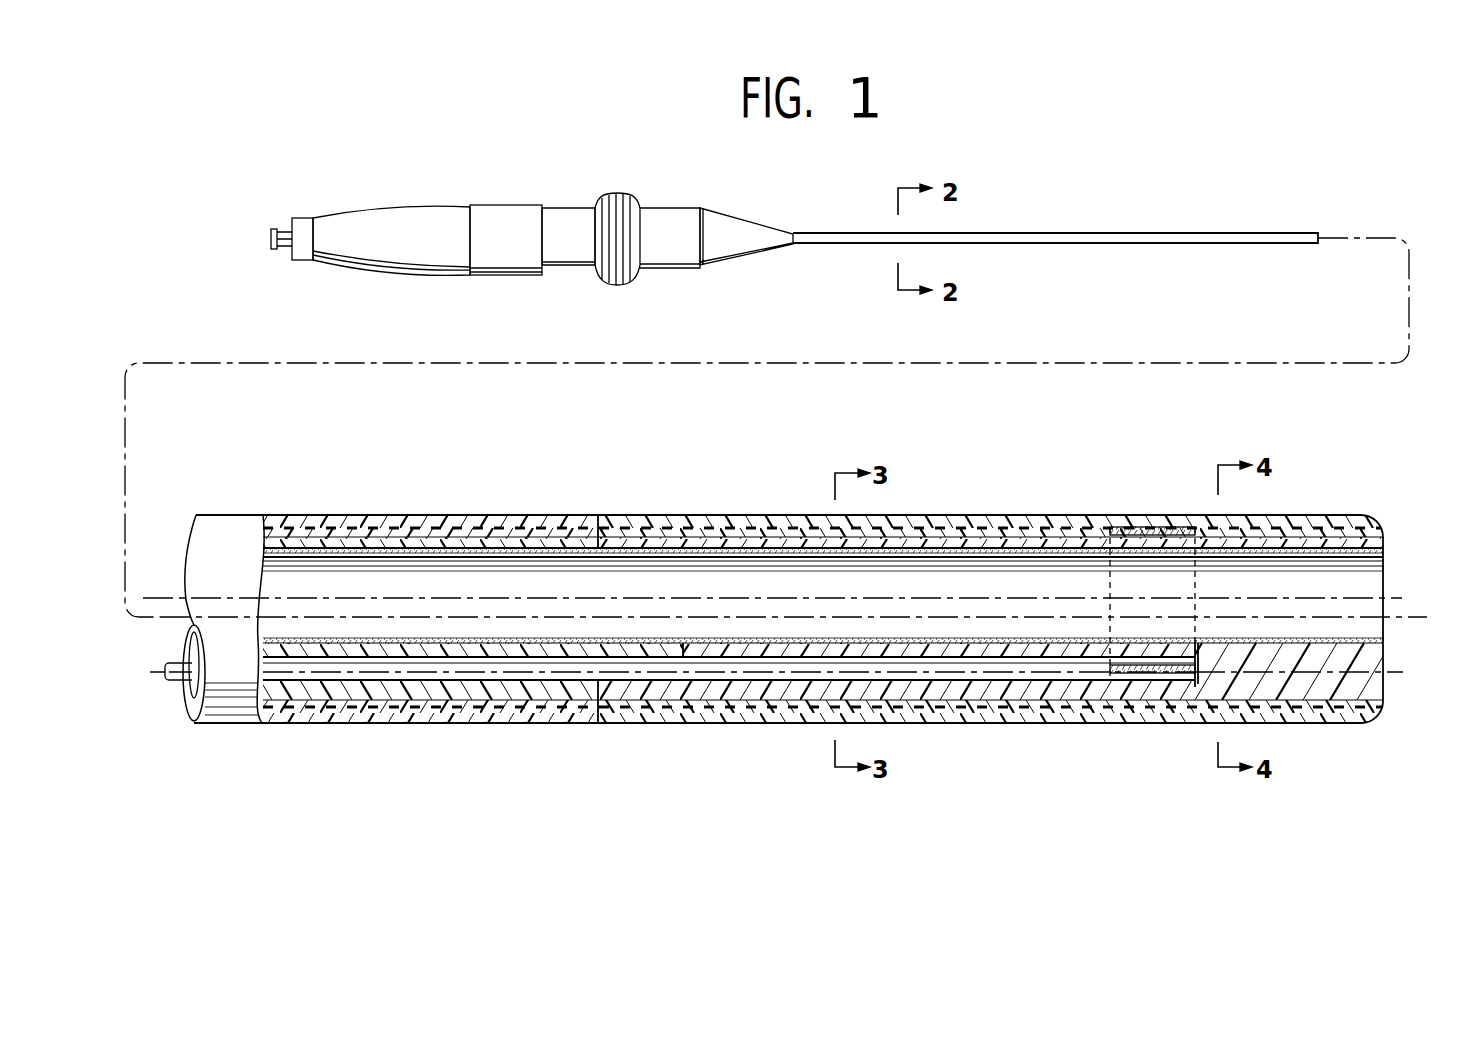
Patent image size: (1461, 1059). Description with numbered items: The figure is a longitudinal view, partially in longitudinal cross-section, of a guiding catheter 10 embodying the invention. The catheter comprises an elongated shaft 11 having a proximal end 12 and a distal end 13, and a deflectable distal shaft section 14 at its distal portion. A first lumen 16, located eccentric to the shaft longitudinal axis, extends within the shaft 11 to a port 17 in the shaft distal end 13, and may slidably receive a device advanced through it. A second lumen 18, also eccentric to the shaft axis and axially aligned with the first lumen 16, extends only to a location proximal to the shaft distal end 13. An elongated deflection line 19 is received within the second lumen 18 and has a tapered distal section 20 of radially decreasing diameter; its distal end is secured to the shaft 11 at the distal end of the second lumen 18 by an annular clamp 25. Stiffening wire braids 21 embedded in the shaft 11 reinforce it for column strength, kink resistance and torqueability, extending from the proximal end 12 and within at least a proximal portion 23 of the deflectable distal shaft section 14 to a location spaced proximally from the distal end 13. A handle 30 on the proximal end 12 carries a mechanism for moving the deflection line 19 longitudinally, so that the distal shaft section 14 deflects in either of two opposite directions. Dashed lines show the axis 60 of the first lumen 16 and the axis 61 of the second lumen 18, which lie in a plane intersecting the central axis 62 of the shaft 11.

The guiding catheter 10 is at (1175, 229).
The elongated shaft 11 is at (1003, 233).
The proximal end 12 is at (822, 233).
The distal end 13 is at (1295, 722).
The deflectable distal shaft section 14 is at (958, 515).
The first lumen 16 is at (300, 558).
The port 17 is at (1385, 628).
The second lumen 18 is at (333, 672).
The deflection line 19 is at (530, 672).
The tapered distal section 20 is at (1047, 672).
The stiffening wire braids 21 is at (553, 527).
The proximal portion 23 is at (710, 520).
The annular clamp 25 is at (1148, 528).
The handle 30 is at (480, 206).
The axis of the first lumen 60 is at (1340, 597).
The axis of the second lumen 61 is at (1387, 672).
The central axis of the shaft 62 is at (1398, 617).